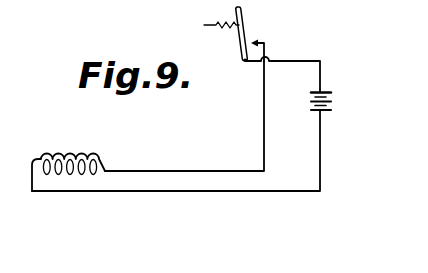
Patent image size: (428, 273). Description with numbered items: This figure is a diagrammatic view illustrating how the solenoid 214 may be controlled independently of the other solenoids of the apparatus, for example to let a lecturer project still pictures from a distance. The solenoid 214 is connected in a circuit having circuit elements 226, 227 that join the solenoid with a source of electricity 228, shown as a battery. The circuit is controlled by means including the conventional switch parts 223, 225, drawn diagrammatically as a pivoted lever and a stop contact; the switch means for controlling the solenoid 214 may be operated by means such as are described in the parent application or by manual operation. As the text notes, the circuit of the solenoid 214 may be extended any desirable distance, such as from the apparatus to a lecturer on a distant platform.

The solenoid 214 is at (96, 138).
The switch part 223 is at (236, 44).
The switch part 225 is at (259, 41).
The circuit element 226 is at (197, 156).
The circuit element 227 is at (264, 192).
The source of electricity 228 is at (334, 101).